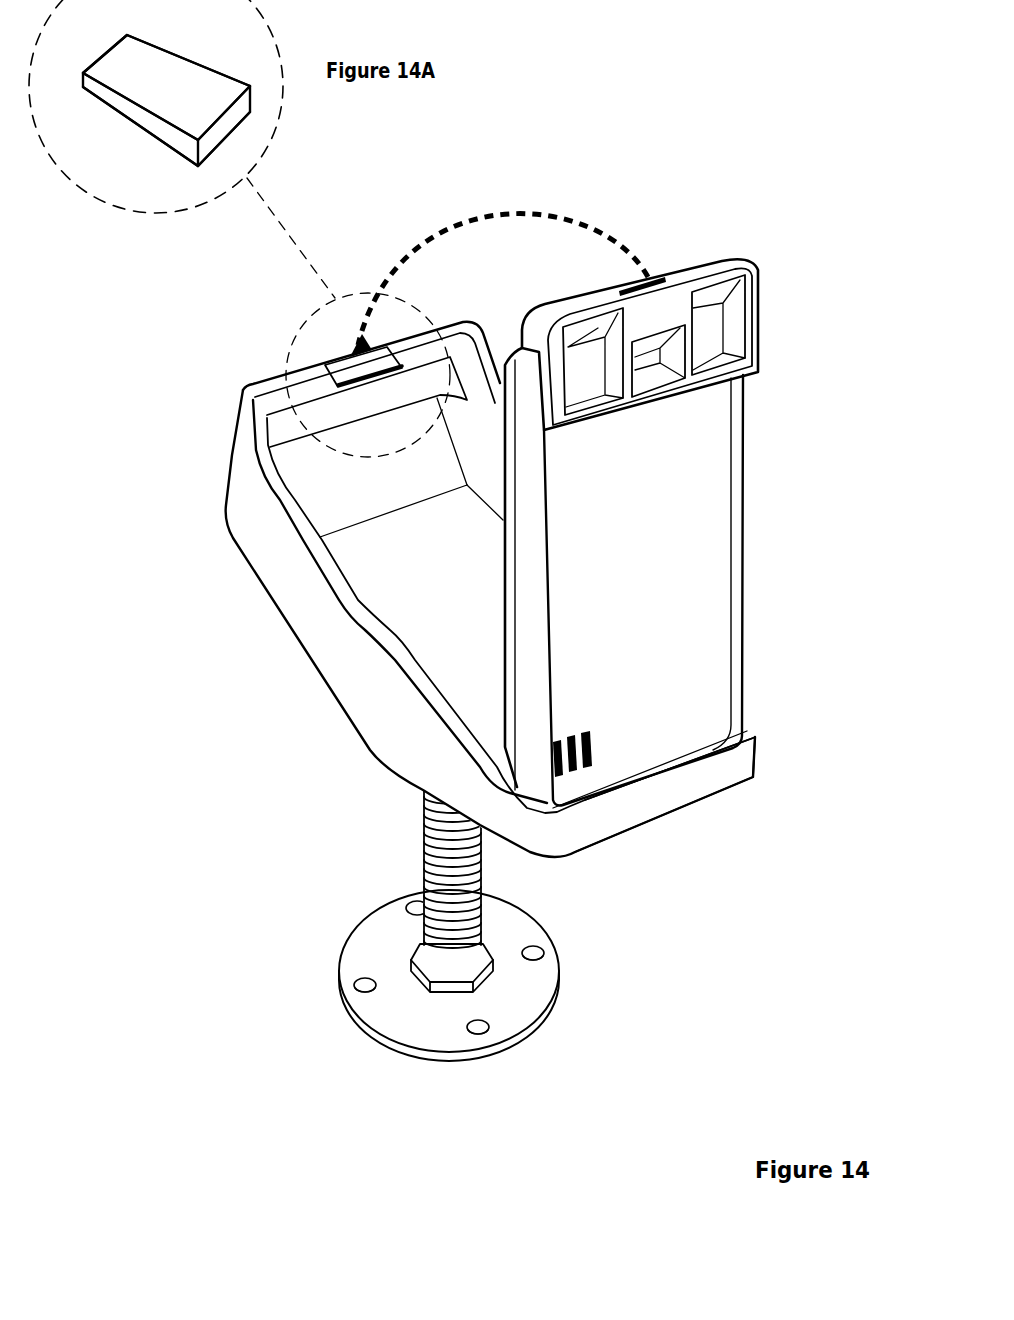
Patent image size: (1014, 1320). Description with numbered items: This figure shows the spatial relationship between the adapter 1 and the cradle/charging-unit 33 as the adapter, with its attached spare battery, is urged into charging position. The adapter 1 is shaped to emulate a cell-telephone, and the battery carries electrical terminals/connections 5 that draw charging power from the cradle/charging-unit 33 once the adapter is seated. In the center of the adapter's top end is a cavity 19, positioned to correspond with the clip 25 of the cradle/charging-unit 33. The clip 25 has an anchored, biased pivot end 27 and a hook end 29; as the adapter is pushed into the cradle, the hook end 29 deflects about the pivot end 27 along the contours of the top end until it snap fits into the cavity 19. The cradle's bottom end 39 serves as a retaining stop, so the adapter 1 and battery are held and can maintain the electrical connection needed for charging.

In FIG. 14, the adapter 1 is at (764, 266).
In FIG. 14, the electrical terminals/connections 5 is at (600, 745).
In FIG. 14, the cavity 19 is at (651, 271).
In FIG. 14A, the clip 25 is at (177, 94).
In FIG. 14, the clip 25 is at (375, 353).
In FIG. 14A, the pivot end 27 is at (100, 47).
In FIG. 14A, the hook end 29 is at (192, 164).
In FIG. 14, the cradle/charging-unit 33 is at (460, 605).
In FIG. 14, the bottom end 39 is at (753, 722).